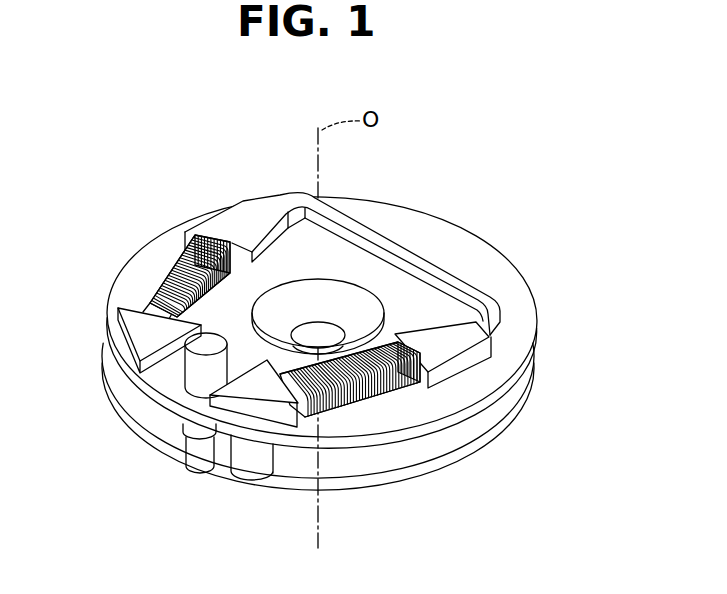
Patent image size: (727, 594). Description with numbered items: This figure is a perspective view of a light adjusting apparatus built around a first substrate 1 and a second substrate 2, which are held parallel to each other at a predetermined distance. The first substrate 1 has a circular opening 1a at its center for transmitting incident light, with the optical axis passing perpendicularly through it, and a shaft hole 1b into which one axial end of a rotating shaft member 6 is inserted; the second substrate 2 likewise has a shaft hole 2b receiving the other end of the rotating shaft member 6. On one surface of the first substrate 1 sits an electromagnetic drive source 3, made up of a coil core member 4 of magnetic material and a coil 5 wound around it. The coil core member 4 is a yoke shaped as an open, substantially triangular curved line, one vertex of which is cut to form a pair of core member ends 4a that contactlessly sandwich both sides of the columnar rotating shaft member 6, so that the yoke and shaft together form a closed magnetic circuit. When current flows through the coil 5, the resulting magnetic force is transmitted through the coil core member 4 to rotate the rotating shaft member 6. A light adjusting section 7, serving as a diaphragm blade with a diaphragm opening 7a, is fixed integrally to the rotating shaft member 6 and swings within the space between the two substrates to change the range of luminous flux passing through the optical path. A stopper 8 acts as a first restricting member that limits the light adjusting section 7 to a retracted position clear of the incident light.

The first substrate 1 is at (494, 265).
The opening 1a is at (328, 298).
The shaft hole 1b is at (188, 396).
The second substrate 2 is at (480, 428).
The shaft hole 2b is at (191, 434).
The electromagnetic drive source 3 is at (215, 176).
The coil core member 4 is at (238, 226).
The core member ends 4a is at (160, 370).
The coil 5 is at (180, 273).
The rotating shaft member 6 is at (195, 378).
The light adjusting section 7 is at (372, 326).
The diaphragm opening 7a is at (340, 330).
The stopper 8 is at (251, 467).